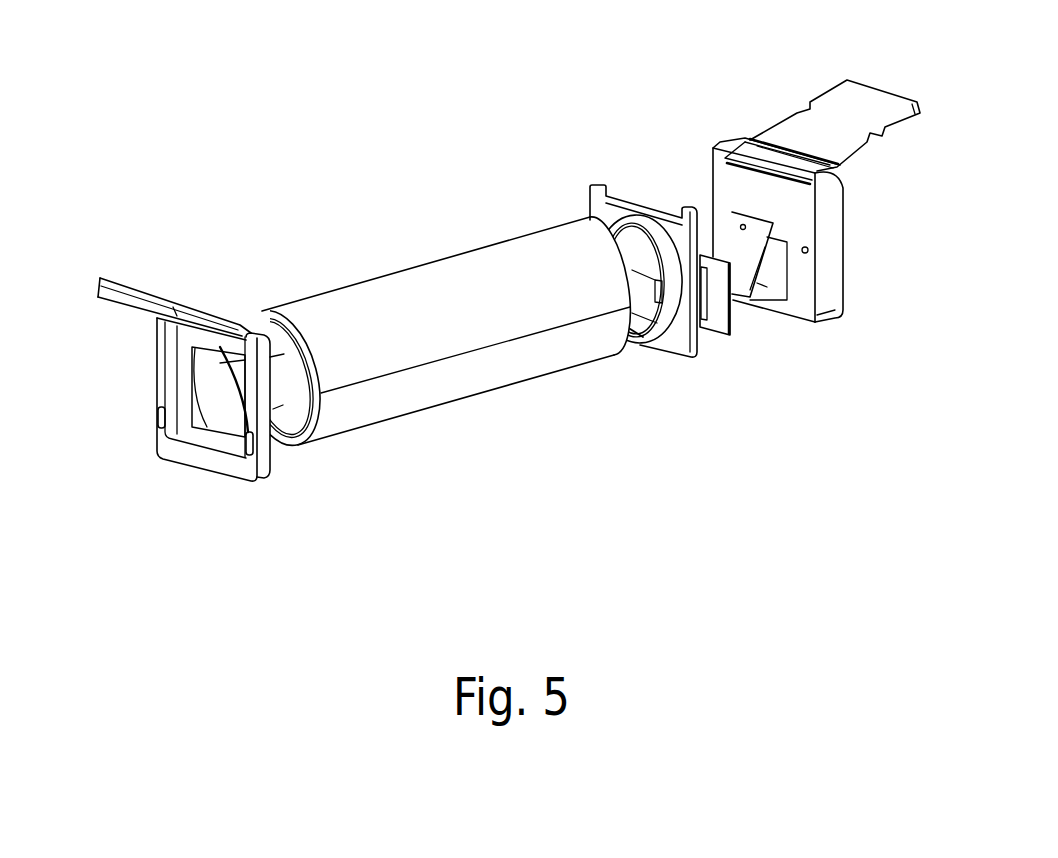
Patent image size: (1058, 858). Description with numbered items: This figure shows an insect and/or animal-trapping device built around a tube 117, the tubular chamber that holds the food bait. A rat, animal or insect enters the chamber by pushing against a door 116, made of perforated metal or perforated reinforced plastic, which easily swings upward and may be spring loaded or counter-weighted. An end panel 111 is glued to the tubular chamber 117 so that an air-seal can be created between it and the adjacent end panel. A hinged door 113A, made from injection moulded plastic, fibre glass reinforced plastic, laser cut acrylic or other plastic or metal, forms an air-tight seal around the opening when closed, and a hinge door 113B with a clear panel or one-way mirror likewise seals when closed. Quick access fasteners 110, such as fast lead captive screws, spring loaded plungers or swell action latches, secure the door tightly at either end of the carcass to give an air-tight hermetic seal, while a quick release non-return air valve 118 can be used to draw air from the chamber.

The quick access fastener 110 is at (157, 422).
The end panel 111 is at (603, 208).
The hinged door 113A is at (862, 108).
The hinge door 113B is at (118, 281).
The door 116 is at (737, 226).
The tube 117 is at (418, 263).
The quick release non-return air valve 118 is at (810, 252).